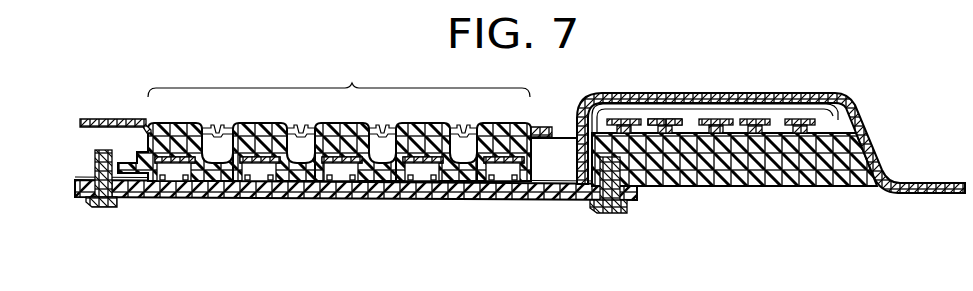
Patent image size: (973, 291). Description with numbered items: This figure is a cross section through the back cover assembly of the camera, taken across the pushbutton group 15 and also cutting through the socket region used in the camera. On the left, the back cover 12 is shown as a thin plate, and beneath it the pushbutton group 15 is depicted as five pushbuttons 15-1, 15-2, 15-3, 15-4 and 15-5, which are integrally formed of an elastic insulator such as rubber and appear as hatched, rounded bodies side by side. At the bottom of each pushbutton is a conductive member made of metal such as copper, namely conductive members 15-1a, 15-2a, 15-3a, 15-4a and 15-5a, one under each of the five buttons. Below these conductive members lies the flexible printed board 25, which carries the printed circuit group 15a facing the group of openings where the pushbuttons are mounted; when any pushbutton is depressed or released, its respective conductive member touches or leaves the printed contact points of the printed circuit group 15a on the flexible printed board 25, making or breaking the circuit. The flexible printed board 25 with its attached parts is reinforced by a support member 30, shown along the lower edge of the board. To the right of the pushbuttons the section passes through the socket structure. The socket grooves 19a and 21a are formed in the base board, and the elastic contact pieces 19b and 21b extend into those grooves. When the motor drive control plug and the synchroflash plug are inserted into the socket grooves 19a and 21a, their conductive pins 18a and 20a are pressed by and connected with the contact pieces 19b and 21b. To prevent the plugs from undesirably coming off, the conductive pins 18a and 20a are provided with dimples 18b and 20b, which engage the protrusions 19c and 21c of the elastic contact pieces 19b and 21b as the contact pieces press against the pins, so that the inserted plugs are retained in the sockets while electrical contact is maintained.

The back cover 12 is at (98, 121).
The pushbutton group 15 is at (347, 121).
The pushbutton 15-1 is at (166, 124).
The pushbutton 15-2 is at (250, 125).
The pushbutton 15-3 is at (335, 125).
The pushbutton 15-4 is at (415, 128).
The pushbutton 15-5 is at (493, 130).
The conductive member 15-1a is at (142, 163).
The conductive member 15-2a is at (280, 163).
The conductive member 15-3a is at (367, 161).
The conductive member 15-4a is at (435, 161).
The conductive member 15-5a is at (532, 165).
The printed circuit group 15a is at (188, 180).
The flexible printed board 25 is at (405, 184).
The support member 30 is at (500, 190).
The conductive pin 18a is at (752, 134).
The dimple 18b is at (866, 133).
The socket groove 19a is at (778, 145).
The elastic contact piece 19b is at (737, 120).
The protrusion 19c is at (747, 128).
The conductive pin 20a is at (633, 130).
The dimple 20b is at (680, 143).
The socket groove 21a is at (680, 132).
The elastic contact piece 21b is at (642, 119).
The protrusion 21c is at (668, 121).